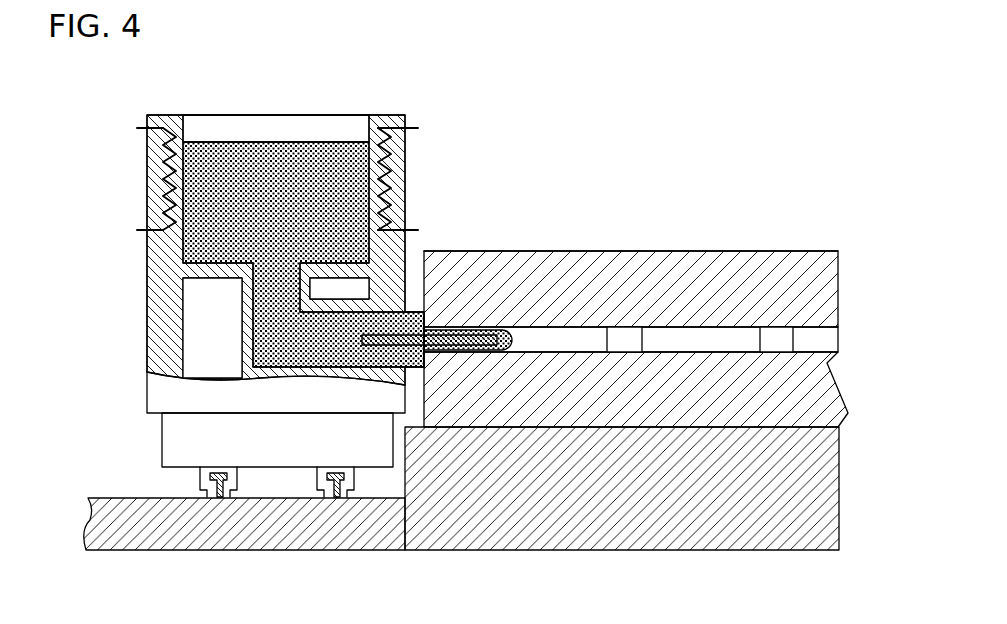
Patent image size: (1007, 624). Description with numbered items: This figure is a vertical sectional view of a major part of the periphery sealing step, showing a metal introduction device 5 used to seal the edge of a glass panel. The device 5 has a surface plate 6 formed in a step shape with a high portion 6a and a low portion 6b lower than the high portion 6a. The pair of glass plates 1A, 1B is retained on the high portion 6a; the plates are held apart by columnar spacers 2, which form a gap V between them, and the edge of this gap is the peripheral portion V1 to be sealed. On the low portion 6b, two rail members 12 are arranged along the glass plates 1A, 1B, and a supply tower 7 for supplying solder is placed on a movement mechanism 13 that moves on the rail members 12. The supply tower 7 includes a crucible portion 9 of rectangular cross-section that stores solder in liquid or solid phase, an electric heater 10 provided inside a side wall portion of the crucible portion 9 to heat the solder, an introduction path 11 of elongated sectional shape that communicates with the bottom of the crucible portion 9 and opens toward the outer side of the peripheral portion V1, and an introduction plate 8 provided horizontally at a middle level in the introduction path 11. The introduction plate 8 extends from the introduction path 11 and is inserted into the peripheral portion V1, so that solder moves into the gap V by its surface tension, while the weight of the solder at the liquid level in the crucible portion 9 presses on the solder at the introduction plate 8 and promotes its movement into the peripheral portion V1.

The metal introduction device 5 is at (453, 107).
The supply tower 7 is at (95, 98).
The crucible portion 9 is at (148, 182).
The electric heater 10 is at (137, 128).
The introduction path 11 is at (257, 340).
The introduction plate 8 is at (458, 330).
The movement mechanism 13 is at (152, 477).
The rail member 12 is at (335, 497).
The surface plate 6 is at (112, 498).
The high portion 6a is at (533, 528).
The low portion 6b is at (347, 533).
The glass plate 1A is at (606, 252).
The glass plate 1B is at (712, 395).
The columnar spacer 2 is at (775, 330).
The gap V is at (817, 335).
The peripheral portion V1 is at (505, 233).